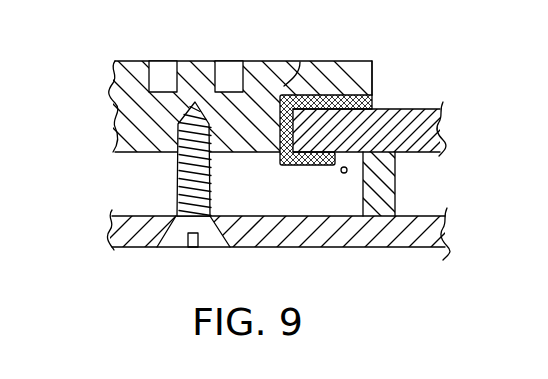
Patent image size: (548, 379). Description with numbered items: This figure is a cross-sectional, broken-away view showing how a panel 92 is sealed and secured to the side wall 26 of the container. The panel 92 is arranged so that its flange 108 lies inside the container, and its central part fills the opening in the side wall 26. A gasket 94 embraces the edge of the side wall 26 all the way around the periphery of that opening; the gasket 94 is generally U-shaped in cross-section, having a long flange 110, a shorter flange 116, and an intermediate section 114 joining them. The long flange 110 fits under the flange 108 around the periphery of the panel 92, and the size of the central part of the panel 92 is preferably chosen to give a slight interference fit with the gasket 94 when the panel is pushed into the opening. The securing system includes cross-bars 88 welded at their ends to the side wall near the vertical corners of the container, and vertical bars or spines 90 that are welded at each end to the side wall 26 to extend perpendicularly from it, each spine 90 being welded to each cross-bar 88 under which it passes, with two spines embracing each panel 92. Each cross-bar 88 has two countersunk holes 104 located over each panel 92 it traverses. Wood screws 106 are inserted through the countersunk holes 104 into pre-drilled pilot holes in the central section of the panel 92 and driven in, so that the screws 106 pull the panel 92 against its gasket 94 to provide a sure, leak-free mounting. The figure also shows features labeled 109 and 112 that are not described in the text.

The side wall 26 is at (418, 116).
The cross-bars 88 is at (392, 251).
The vertical bars or spines 90 is at (398, 181).
The panels 92 is at (130, 203).
The gasket 94 is at (378, 96).
The countersunk holes 104 is at (174, 248).
The wood screws 106 is at (211, 184).
The flange 108 is at (322, 62).
The cover plate 109 is at (127, 133).
The long flange 110 is at (300, 62).
The recesses 112 is at (227, 72).
The intermediate section 114 is at (178, 163).
The shorter flange 116 is at (303, 165).